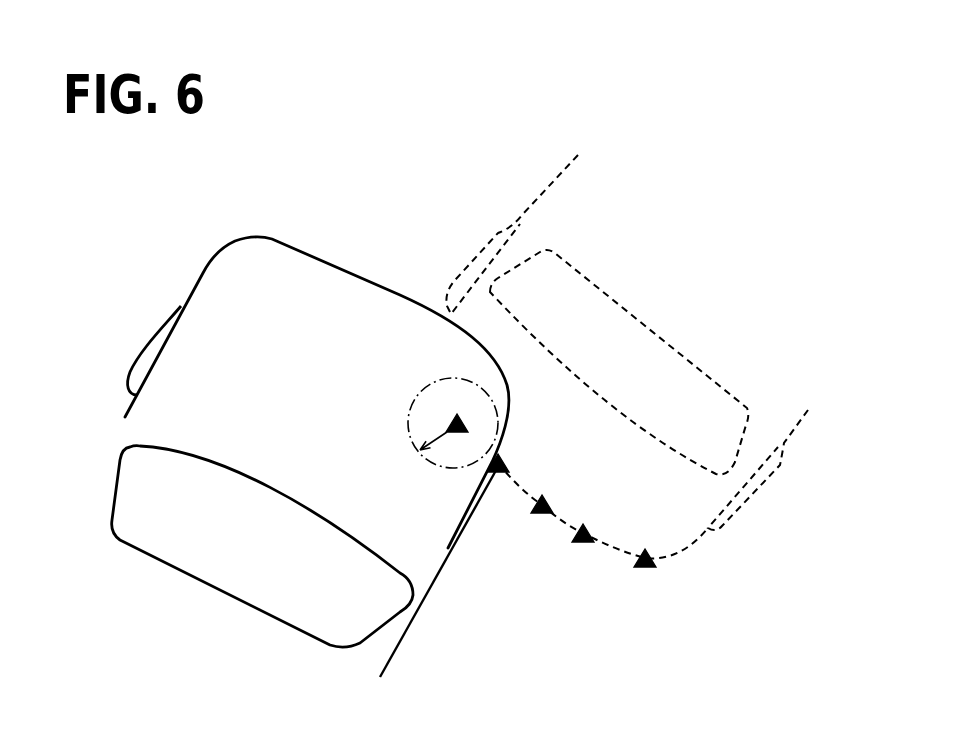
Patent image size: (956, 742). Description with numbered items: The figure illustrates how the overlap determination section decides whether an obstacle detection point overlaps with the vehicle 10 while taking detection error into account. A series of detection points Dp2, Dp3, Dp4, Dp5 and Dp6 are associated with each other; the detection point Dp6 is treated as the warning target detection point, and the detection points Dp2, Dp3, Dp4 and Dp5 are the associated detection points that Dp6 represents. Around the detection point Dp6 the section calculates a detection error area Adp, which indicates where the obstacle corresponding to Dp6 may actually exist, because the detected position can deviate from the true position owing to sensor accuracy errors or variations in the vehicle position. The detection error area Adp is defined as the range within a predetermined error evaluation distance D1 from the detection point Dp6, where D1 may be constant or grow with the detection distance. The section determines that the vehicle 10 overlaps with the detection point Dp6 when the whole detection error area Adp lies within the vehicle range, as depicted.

The vehicle 10 is at (258, 237).
The error evaluation distance D1 is at (436, 438).
The detection point Dp2 is at (647, 567).
The detection point Dp3 is at (585, 543).
The detection point Dp4 is at (541, 514).
The detection point Dp5 is at (506, 464).
The detection point Dp6 is at (466, 425).
The detection error area Adp is at (450, 468).